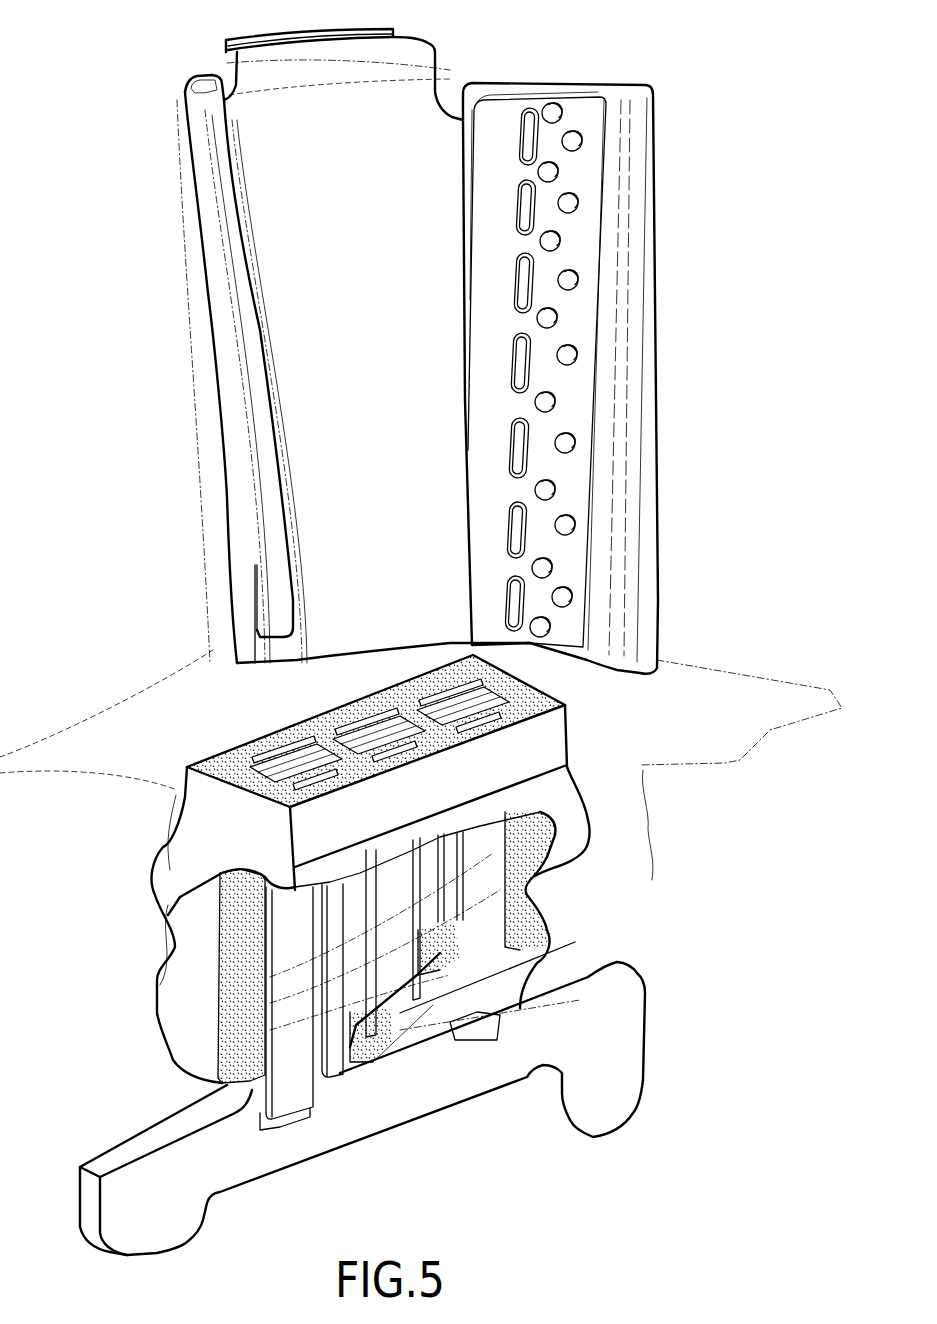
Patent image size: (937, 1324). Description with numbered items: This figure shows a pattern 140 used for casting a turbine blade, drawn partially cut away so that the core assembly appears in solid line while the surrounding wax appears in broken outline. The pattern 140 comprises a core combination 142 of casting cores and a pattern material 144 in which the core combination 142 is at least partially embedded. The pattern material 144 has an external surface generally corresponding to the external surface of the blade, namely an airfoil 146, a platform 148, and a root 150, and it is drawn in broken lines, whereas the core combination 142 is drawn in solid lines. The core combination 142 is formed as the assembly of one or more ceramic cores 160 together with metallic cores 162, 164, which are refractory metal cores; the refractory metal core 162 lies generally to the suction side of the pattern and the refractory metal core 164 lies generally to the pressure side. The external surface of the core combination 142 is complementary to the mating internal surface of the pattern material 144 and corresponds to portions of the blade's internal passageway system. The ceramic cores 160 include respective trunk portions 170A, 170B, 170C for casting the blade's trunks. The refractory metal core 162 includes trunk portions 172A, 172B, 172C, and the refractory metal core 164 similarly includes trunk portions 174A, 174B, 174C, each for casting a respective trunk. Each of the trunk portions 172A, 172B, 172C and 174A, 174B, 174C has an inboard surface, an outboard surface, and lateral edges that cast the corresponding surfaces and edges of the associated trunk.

The pattern 140 is at (172, 224).
The core combination 142 is at (435, 1047).
The pattern material 144 is at (560, 980).
The airfoil 146 is at (204, 386).
The platform 148 is at (73, 713).
The root 150 is at (593, 874).
The ceramic core 160 is at (161, 1112).
The metallic core (refractory metal core) 162 is at (233, 58).
The metallic core (refractory metal core) 164 is at (359, 577).
The trunk portion 170A is at (250, 1092).
The trunk portion 170B is at (352, 1062).
The trunk portion 170C is at (447, 910).
The trunk portion 172A is at (292, 925).
The trunk portion 172B is at (392, 975).
The trunk portion 172C is at (495, 930).
The trunk portion 174A is at (242, 740).
The trunk portion 174B is at (347, 712).
The trunk portion 174C is at (448, 688).